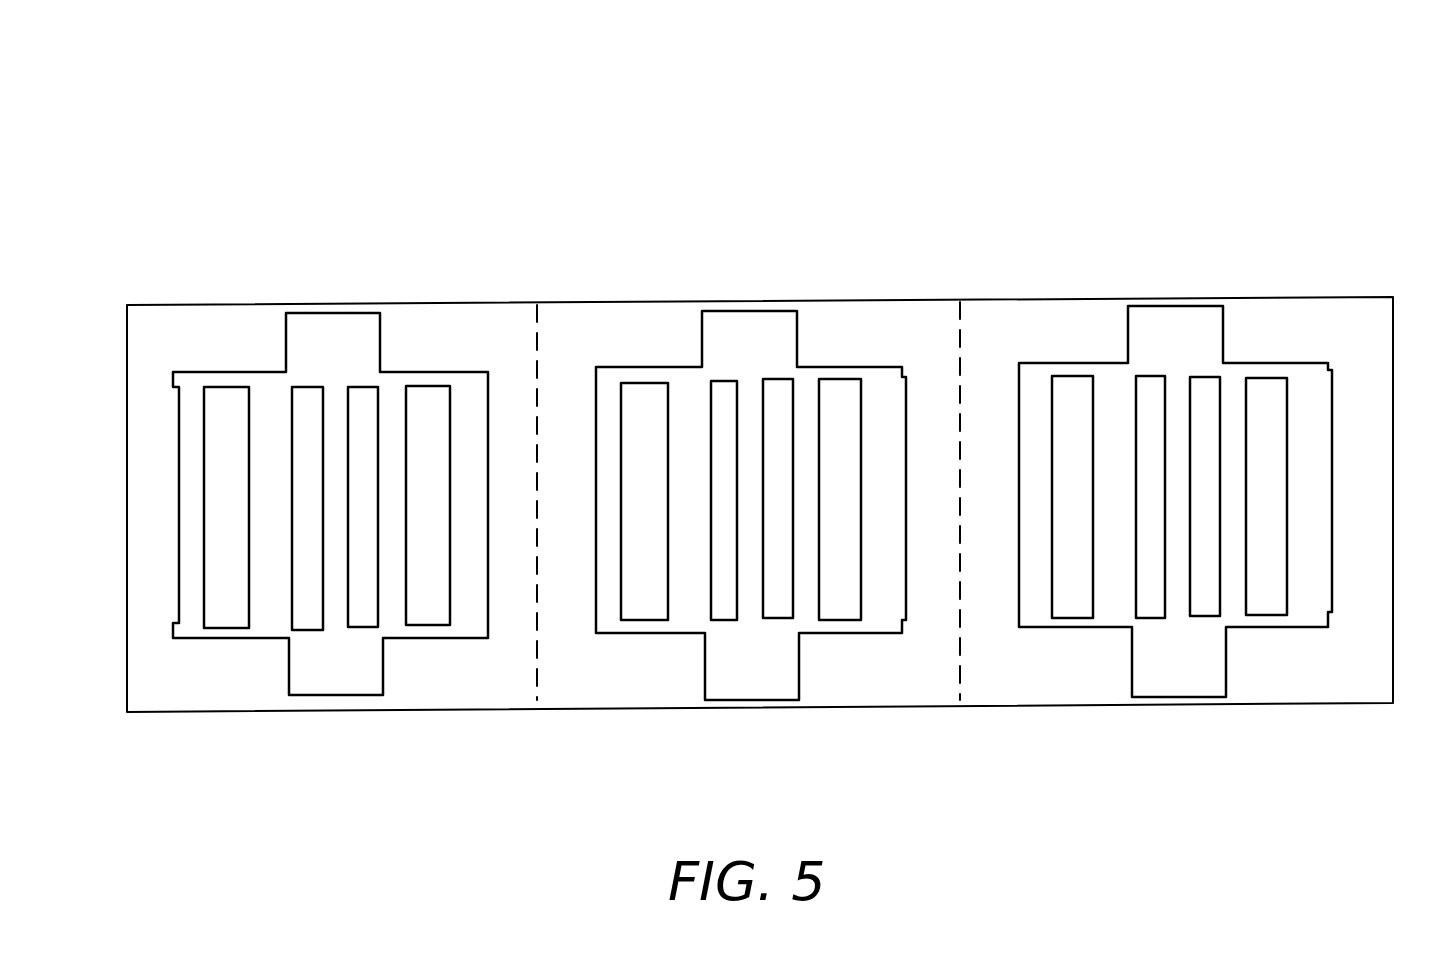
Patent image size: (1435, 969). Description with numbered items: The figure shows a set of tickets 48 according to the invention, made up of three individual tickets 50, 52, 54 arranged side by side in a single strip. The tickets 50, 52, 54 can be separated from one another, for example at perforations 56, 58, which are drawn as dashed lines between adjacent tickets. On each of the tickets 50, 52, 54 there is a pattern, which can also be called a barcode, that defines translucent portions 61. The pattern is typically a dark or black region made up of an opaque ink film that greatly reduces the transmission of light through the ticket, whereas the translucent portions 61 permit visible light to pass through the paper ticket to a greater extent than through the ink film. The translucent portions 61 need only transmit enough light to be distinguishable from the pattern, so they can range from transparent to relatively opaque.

The set of tickets 48 is at (330, 150).
The ticket 50 is at (310, 529).
The ticket 52 is at (751, 514).
The ticket 54 is at (1175, 523).
The perforation 56 is at (537, 304).
The perforation 58 is at (962, 302).
The translucent portions 61 is at (1073, 602).